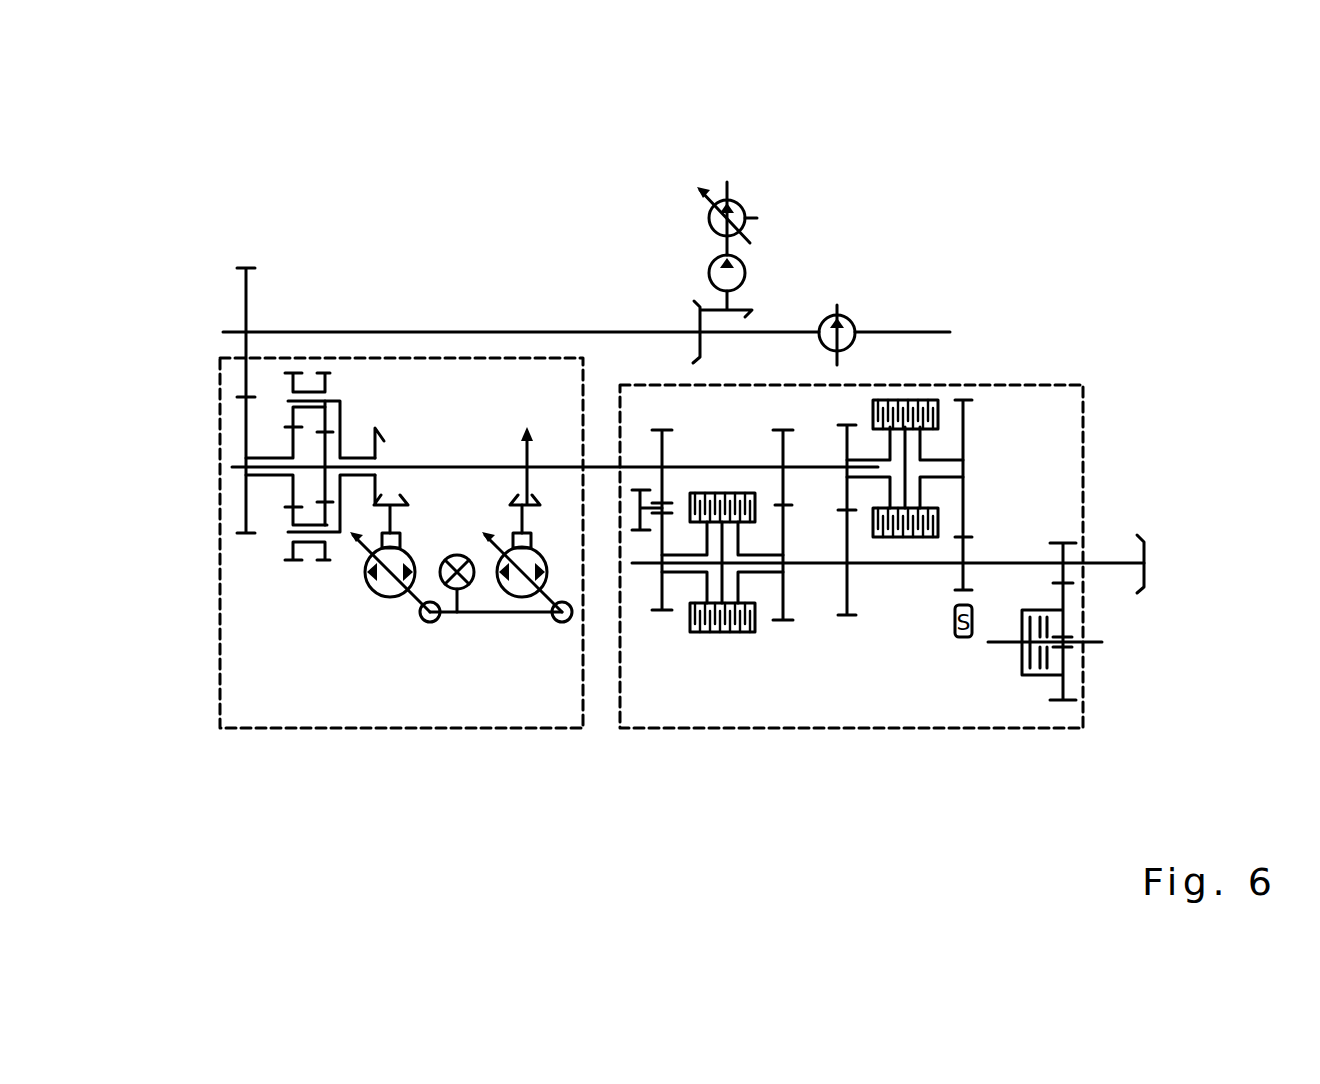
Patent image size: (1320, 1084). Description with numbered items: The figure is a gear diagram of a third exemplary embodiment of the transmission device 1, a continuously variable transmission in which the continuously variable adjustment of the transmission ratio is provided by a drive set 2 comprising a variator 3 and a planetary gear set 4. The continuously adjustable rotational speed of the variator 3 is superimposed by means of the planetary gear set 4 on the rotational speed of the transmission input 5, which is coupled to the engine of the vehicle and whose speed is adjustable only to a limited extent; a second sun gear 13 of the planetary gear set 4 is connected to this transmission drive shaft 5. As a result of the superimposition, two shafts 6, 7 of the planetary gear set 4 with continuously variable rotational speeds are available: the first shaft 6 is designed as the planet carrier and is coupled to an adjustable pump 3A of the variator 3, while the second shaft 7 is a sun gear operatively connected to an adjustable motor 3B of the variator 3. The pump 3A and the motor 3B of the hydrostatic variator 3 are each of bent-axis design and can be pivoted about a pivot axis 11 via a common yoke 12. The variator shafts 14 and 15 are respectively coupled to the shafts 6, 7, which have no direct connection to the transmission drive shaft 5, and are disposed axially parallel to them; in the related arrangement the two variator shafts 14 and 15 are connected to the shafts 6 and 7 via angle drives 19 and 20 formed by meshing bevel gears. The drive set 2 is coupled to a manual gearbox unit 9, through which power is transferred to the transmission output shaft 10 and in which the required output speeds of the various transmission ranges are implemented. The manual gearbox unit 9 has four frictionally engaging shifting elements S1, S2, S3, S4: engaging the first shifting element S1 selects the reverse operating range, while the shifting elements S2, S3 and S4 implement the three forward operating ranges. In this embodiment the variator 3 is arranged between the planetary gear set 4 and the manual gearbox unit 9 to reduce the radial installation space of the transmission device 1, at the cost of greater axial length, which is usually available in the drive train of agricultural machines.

The transmission device 1 is at (212, 292).
The drive set 2 is at (267, 731).
The variator 3 is at (453, 614).
The adjustable pump 3A is at (373, 597).
The adjustable motor 3B is at (528, 597).
The planetary gear set 4 is at (362, 400).
The transmission input 5 is at (287, 332).
The first shaft 6 is at (340, 401).
The second shaft 7 is at (327, 487).
The manual gearbox unit 9 is at (845, 738).
The transmission output shaft 10 is at (1103, 564).
The pivot axis 11 is at (473, 629).
The common yoke 12 is at (500, 613).
The second sun gear 13 is at (293, 440).
The variator shaft 14 is at (375, 513).
The variator shaft 15 is at (528, 515).
The angle drive 19 is at (402, 448).
The angle drive 20 is at (545, 447).
The first shifting element S1 is at (703, 640).
The second shifting element S2 is at (742, 638).
The third shifting element S3 is at (887, 387).
The fourth shifting element S4 is at (928, 387).